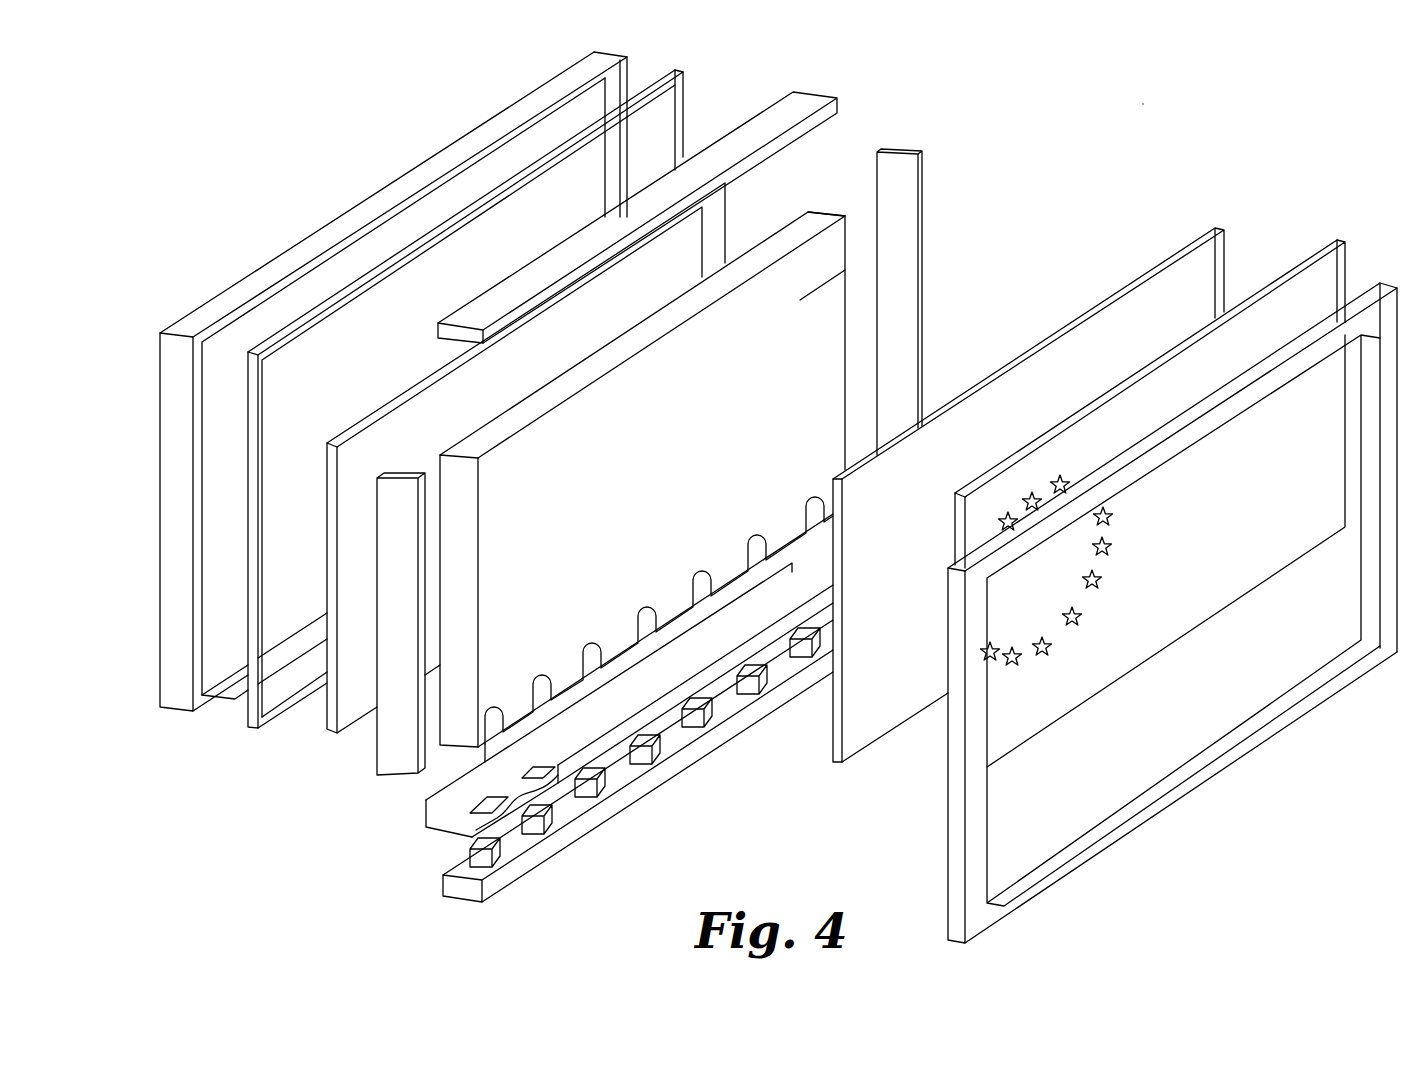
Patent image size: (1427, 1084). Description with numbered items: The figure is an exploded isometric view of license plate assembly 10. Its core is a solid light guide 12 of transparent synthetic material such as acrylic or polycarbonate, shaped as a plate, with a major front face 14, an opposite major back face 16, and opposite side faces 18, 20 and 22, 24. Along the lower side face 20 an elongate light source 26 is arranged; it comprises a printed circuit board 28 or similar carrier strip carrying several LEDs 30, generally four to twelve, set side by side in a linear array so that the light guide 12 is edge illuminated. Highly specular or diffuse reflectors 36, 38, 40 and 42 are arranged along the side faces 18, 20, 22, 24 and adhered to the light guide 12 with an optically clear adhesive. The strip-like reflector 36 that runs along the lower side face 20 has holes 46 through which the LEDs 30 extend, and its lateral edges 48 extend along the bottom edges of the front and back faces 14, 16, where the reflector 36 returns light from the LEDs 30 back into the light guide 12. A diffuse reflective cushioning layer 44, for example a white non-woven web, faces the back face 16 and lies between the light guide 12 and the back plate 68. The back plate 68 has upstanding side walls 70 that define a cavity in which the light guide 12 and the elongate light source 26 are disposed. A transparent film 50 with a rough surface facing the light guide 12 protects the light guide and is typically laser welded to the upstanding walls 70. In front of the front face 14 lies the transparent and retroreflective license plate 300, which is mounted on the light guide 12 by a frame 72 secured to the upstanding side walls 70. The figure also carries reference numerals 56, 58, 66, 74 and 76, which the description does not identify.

The license plate assembly 10 is at (1143, 104).
The light guide 12 is at (823, 290).
The major front face 14 is at (812, 362).
The major back face 16 is at (475, 428).
The side face 18 is at (813, 222).
The lower side face 20 is at (620, 658).
The side face 22 is at (460, 500).
The side face 24 is at (847, 248).
The elongate light source 26 is at (750, 796).
The printed circuit board 28 is at (753, 713).
The LEDs 30 is at (581, 797).
The reflector 36 is at (437, 828).
The reflector 38 is at (387, 737).
The reflector 40 is at (545, 272).
The reflector 42 is at (898, 172).
The cushioning layer 44 is at (352, 450).
The holes 46 is at (537, 770).
The lateral edges 48 is at (424, 818).
The transparent film 50 is at (1197, 260).
The plate characters 56 is at (1243, 503).
The plate graphics 58 is at (1053, 662).
The housing assembly 66 is at (156, 573).
The back plate 68 is at (218, 448).
The upstanding side walls 70 is at (170, 361).
The frame 72 is at (1218, 767).
The rear frame bottom edge 74 is at (232, 665).
The inner frame bottom edge 76 is at (260, 717).
The license plate 300 is at (1333, 263).